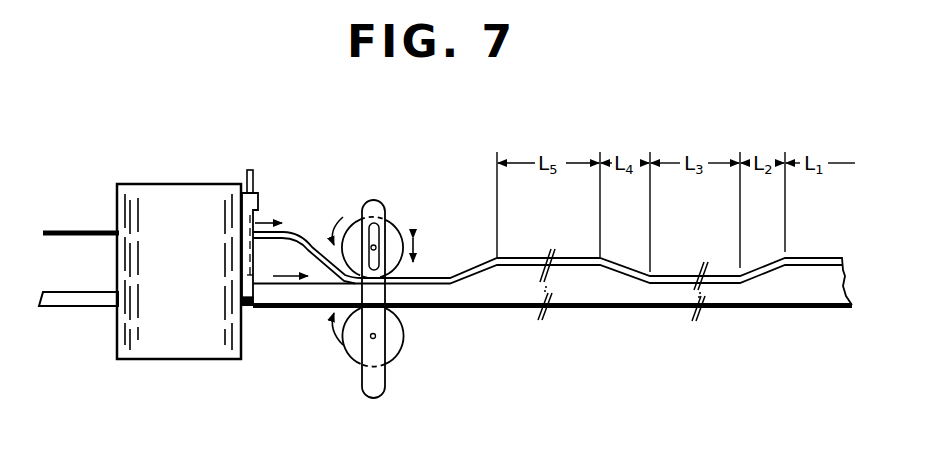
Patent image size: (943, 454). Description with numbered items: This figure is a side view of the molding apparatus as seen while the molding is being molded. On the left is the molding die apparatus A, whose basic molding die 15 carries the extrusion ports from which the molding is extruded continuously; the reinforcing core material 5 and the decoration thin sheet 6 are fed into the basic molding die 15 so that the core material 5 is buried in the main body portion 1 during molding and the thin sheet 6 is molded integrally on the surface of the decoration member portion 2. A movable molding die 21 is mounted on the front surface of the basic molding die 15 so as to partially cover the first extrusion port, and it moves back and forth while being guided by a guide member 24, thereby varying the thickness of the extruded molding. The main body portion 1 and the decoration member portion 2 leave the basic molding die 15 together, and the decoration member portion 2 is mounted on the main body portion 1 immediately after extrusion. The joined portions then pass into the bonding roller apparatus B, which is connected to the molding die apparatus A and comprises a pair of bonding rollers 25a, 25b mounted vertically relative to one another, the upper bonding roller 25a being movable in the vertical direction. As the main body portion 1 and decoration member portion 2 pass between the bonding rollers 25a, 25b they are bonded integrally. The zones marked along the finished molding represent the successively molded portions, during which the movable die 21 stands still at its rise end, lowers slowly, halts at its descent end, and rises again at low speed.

The main body portion 1 is at (310, 297).
The decoration member portion 2 is at (307, 230).
The reinforcing core material 5 is at (89, 297).
The decoration thin sheet 6 is at (90, 230).
The basic molding die 15 is at (175, 350).
The movable molding die 21 is at (248, 219).
The guide member 24 is at (249, 306).
The upper bonding roller 25a is at (392, 232).
The lower bonding roller 25b is at (350, 347).
The molding die apparatus A is at (196, 172).
The bonding roller apparatus B is at (410, 345).